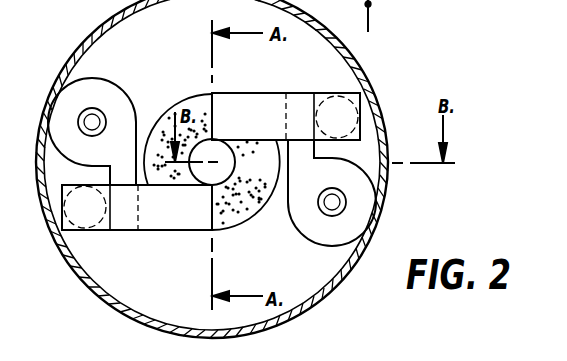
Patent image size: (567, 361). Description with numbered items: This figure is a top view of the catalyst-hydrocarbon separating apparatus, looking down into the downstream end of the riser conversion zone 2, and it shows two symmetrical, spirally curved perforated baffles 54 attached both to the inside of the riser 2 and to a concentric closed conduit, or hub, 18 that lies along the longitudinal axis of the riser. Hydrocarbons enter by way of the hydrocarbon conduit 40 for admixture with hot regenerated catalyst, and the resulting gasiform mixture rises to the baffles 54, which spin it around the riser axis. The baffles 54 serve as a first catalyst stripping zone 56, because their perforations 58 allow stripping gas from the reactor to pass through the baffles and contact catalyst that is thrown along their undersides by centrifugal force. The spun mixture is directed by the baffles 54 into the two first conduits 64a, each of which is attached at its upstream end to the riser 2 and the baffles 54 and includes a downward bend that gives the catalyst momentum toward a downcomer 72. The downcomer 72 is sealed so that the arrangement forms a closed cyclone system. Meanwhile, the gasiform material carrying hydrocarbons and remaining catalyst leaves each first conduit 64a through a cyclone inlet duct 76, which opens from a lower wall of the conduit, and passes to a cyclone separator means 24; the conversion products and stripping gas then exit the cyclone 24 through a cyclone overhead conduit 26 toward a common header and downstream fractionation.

The riser conversion zone 2 is at (167, 110).
The closed conduit (hub) 18 is at (215, 148).
The cyclone separator means 24 is at (67, 105).
The cyclone overhead conduit 26 is at (78, 119).
The hydrocarbon conduit 40 is at (369, 22).
The perforated baffles 54 is at (216, 232).
The first catalyst stripping zone 56 is at (249, 214).
The perforations 58 is at (180, 190).
The first conduit 64a is at (259, 93).
The downcomer 72 is at (48, 205).
The cyclone inlet duct 76 is at (123, 180).